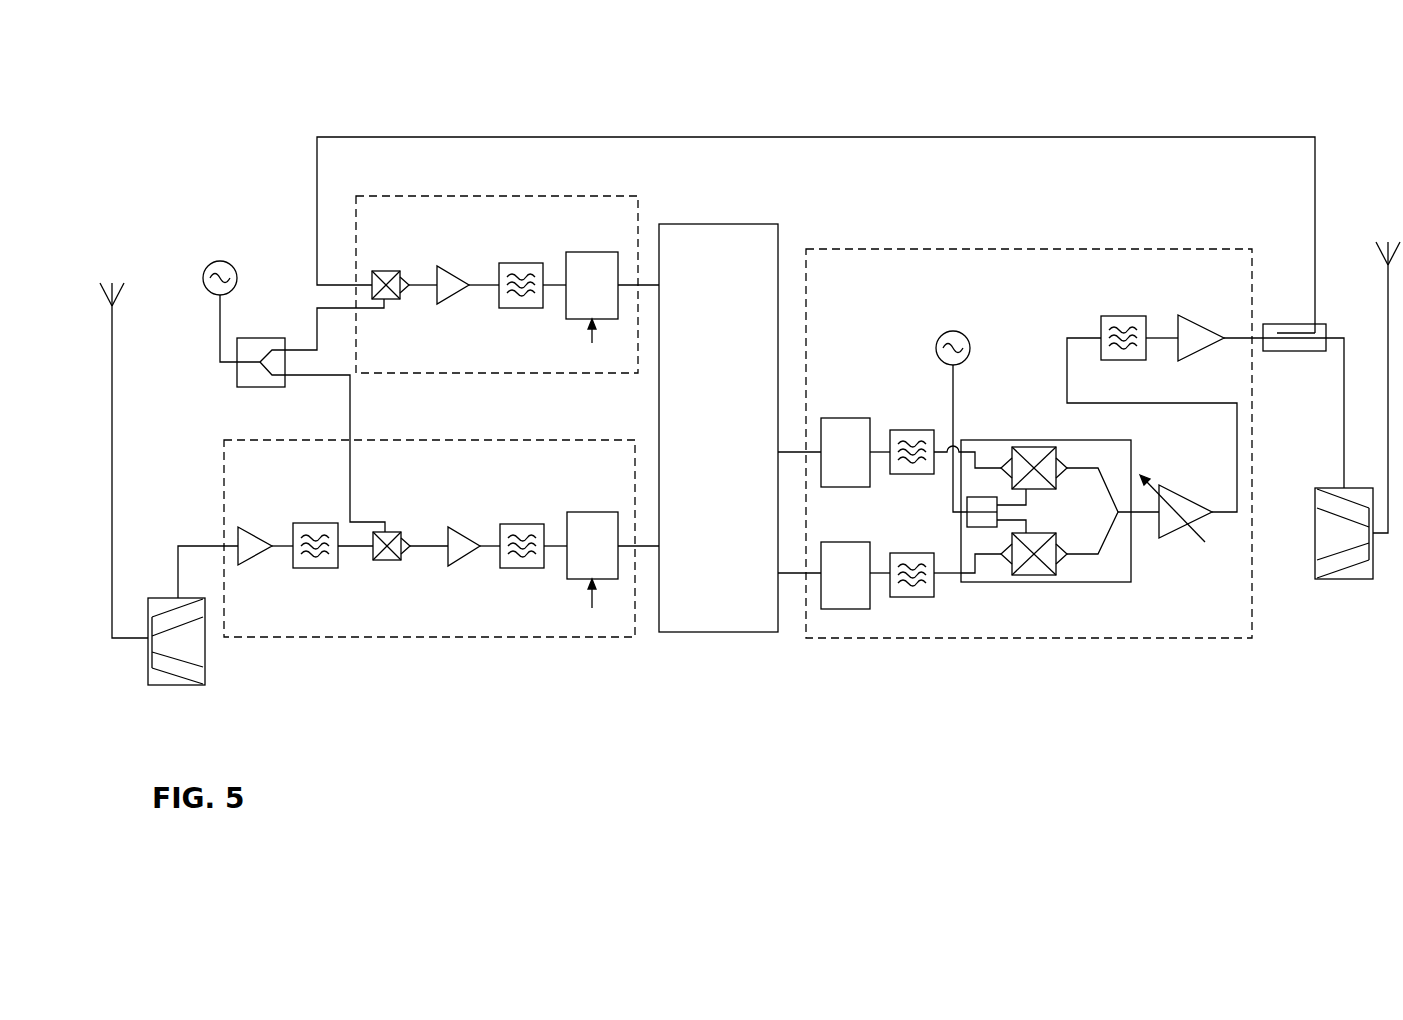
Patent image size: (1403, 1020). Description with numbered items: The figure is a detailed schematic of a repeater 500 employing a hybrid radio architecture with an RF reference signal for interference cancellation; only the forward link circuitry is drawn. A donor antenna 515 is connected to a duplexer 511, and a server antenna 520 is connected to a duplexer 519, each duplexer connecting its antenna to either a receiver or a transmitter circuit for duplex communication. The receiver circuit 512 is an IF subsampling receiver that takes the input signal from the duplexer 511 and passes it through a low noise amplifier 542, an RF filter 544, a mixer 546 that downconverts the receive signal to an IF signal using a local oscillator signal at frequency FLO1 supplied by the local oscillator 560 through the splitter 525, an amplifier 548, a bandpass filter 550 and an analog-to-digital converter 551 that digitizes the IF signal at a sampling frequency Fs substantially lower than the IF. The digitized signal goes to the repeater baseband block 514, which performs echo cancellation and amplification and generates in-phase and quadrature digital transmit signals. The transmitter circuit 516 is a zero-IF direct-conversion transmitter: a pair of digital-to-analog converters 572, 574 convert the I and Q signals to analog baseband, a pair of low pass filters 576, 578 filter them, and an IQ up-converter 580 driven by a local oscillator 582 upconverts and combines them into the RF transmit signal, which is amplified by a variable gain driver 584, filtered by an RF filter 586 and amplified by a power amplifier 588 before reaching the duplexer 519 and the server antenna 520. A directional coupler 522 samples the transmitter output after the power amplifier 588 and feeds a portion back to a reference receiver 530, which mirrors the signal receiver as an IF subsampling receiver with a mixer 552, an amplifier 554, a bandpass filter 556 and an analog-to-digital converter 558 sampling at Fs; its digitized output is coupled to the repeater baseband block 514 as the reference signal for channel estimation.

The repeater 500 is at (738, 205).
The duplexer 511 is at (178, 688).
The receiver circuit 512 is at (429, 526).
The repeater baseband block 514 is at (683, 632).
The donor antenna 515 is at (112, 365).
The transmitter circuit 516 is at (888, 249).
The duplexer 519 is at (1337, 580).
The server antenna 520 is at (1386, 283).
The directional coupler 522 is at (1270, 352).
The splitter 525 is at (251, 387).
The reference receiver 530 is at (503, 268).
The low noise amplifier 542 is at (258, 527).
The RF filter 544 is at (315, 523).
The mixer 546 is at (390, 532).
The amplifier 548 is at (465, 562).
The bandpass filter 550 is at (513, 524).
The analog-to-digital converter 551 is at (582, 512).
The mixer 552 is at (383, 271).
The amplifier 554 is at (456, 300).
The bandpass filter 556 is at (522, 263).
The analog-to-digital converter 558 is at (590, 252).
The first local oscillator 560 is at (238, 281).
The digital-to-analog converter 572 is at (845, 418).
The digital-to-analog converter 574 is at (845, 542).
The low pass filter 576 is at (908, 553).
The low pass filter 578 is at (911, 430).
The IQ up-converter 580 is at (1020, 440).
The local oscillator 582 is at (936, 347).
The variable gain driver 584 is at (1188, 493).
The RF filter 586 is at (1122, 316).
The power amplifier 588 is at (1200, 315).